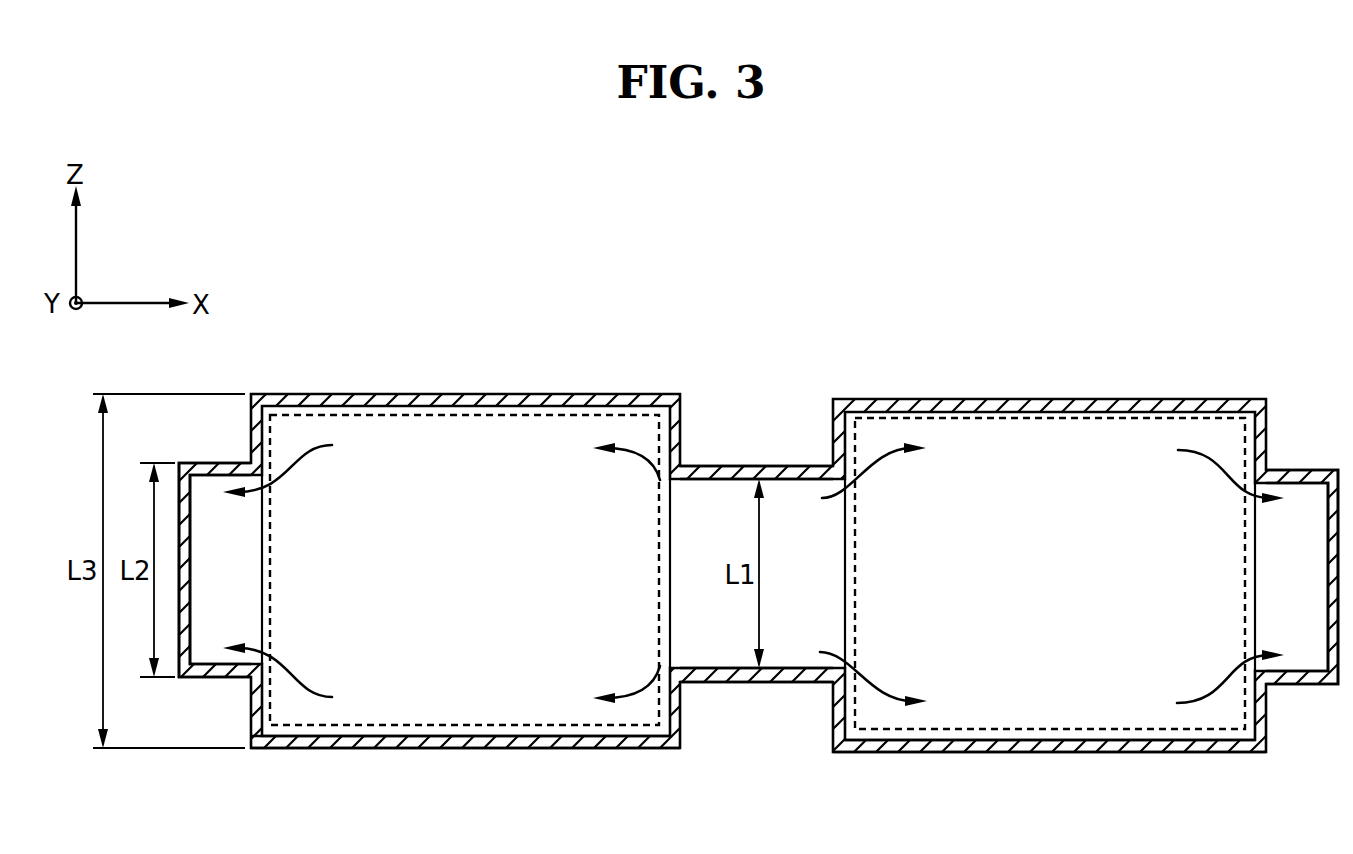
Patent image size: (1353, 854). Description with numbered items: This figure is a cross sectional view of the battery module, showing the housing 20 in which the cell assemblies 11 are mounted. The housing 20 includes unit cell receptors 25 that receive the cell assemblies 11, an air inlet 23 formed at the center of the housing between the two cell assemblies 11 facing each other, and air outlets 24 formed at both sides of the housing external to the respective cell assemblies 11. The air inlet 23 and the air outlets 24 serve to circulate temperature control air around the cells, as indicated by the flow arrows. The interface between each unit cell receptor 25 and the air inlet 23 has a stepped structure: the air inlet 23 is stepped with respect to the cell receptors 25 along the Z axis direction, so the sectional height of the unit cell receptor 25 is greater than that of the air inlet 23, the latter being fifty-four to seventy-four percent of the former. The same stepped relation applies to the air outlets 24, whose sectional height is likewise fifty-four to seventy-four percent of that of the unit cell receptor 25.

The cell assembly 11 is at (455, 432).
The housing 20 is at (292, 380).
The air inlet 23 is at (790, 495).
The air outlet 24 is at (209, 650).
The unit cell receptor 25 is at (408, 742).